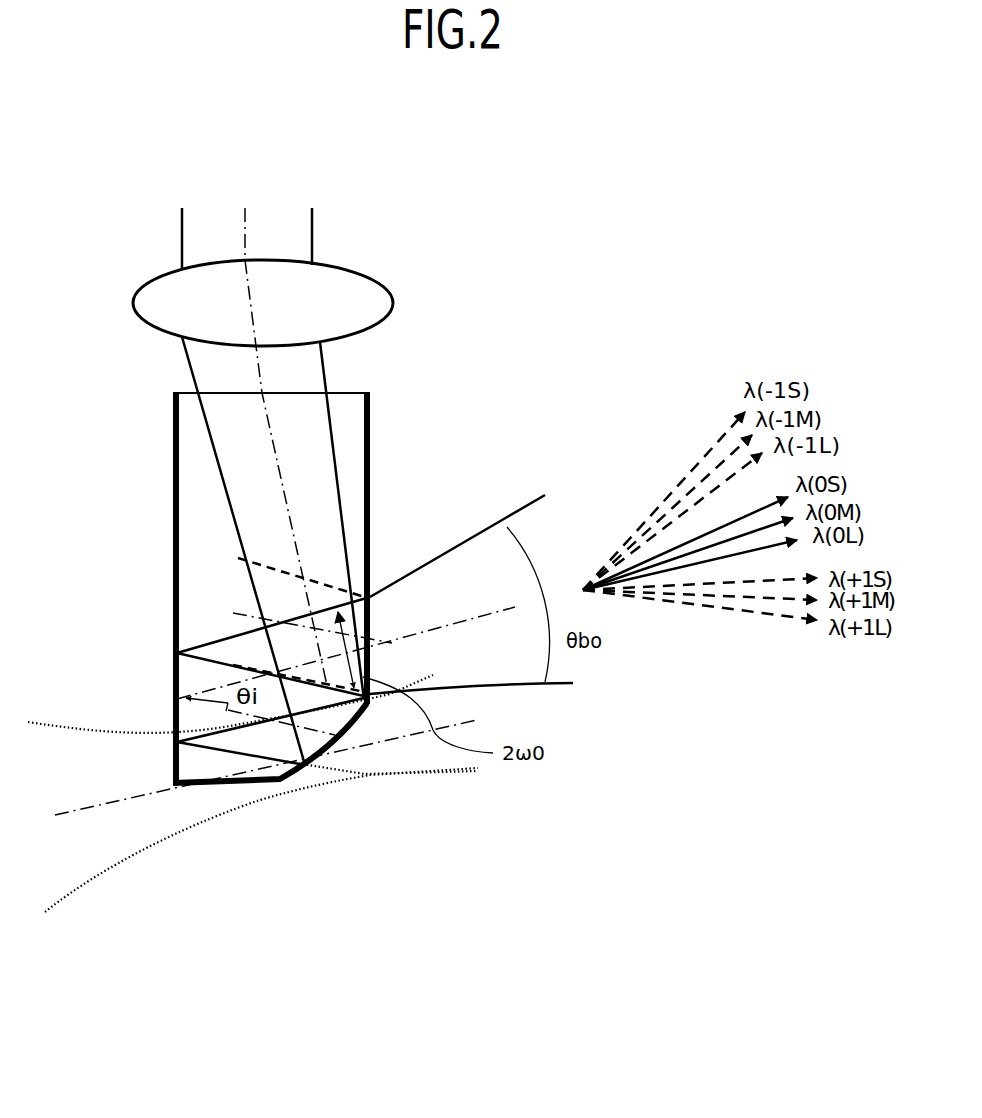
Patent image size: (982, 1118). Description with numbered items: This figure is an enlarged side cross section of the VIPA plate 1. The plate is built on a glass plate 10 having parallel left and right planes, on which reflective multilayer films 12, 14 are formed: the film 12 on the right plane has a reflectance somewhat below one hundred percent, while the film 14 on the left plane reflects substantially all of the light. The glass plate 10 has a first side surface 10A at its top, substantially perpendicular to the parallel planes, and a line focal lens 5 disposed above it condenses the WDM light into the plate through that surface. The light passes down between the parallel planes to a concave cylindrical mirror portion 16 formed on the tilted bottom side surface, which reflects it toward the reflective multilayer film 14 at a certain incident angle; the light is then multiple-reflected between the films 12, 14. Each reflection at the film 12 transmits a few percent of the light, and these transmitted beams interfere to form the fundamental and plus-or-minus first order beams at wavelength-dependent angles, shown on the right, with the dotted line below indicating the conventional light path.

The VIPA plate 1 is at (136, 417).
The line focal lens 5 is at (137, 287).
The glass plate 10 is at (267, 607).
The first side surface 10A is at (337, 393).
The reflective multilayer film 12 is at (372, 462).
The reflective multilayer film 14 is at (173, 505).
The concave cylindrical mirror portion 16 is at (329, 749).